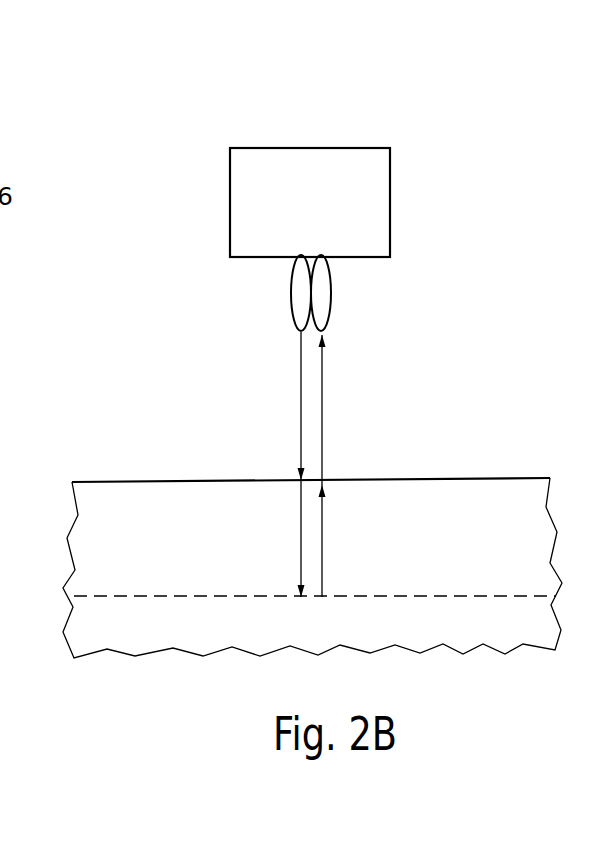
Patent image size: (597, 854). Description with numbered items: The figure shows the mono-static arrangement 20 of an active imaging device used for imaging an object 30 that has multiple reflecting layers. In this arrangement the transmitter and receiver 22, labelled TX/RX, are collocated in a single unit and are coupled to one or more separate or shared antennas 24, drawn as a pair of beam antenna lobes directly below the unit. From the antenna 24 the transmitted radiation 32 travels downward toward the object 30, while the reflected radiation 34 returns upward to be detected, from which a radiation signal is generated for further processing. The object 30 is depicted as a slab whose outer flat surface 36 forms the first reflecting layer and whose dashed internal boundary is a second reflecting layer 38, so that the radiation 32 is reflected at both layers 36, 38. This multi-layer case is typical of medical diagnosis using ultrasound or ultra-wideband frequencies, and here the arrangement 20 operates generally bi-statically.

The mono-static arrangement 20 is at (382, 108).
The transmitter and receiver 22 is at (390, 202).
The antenna 24 is at (332, 292).
The object 30 is at (466, 498).
The radiation 32 is at (301, 407).
The reflected radiation 34 is at (322, 405).
The surface 36 is at (153, 481).
The reflecting layer 38 is at (90, 598).